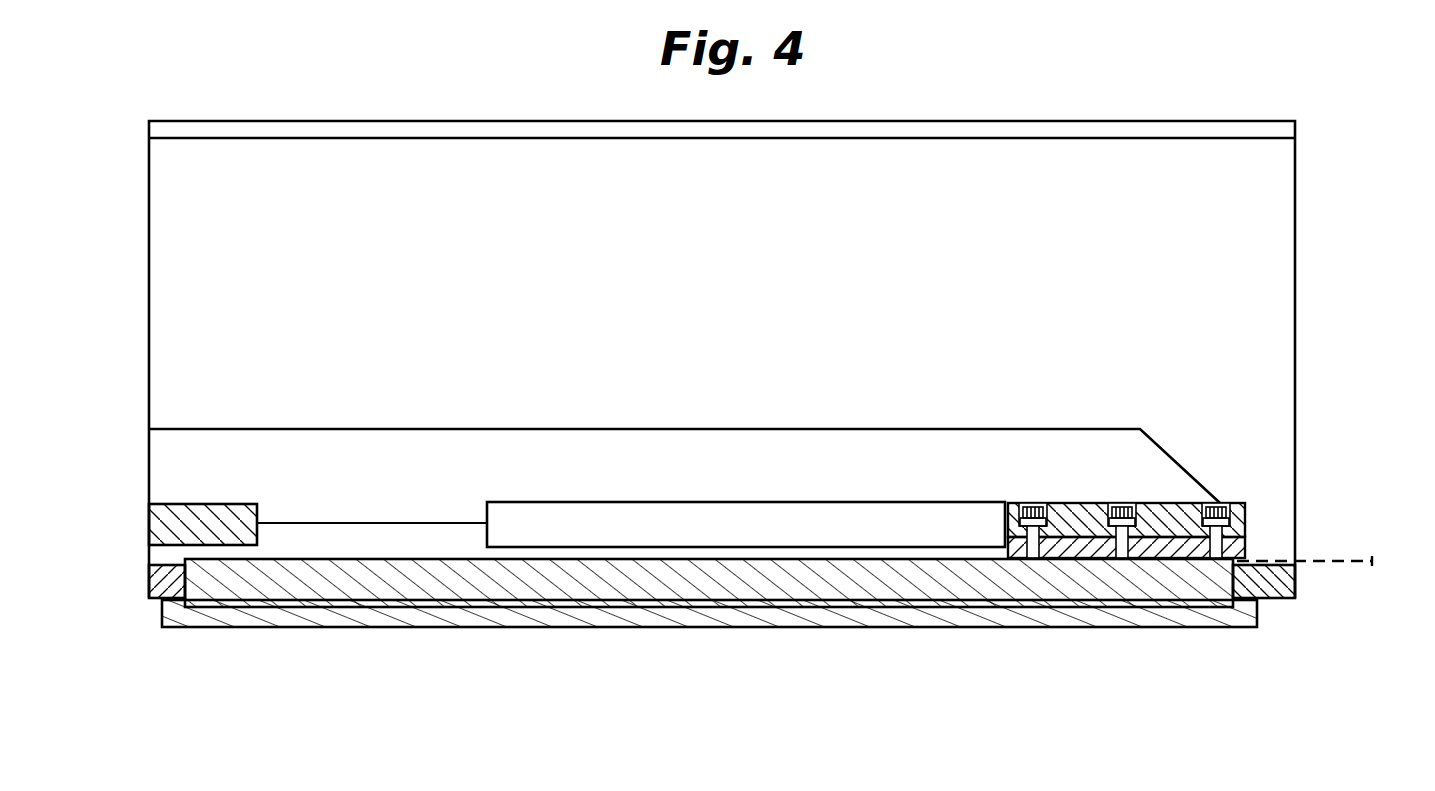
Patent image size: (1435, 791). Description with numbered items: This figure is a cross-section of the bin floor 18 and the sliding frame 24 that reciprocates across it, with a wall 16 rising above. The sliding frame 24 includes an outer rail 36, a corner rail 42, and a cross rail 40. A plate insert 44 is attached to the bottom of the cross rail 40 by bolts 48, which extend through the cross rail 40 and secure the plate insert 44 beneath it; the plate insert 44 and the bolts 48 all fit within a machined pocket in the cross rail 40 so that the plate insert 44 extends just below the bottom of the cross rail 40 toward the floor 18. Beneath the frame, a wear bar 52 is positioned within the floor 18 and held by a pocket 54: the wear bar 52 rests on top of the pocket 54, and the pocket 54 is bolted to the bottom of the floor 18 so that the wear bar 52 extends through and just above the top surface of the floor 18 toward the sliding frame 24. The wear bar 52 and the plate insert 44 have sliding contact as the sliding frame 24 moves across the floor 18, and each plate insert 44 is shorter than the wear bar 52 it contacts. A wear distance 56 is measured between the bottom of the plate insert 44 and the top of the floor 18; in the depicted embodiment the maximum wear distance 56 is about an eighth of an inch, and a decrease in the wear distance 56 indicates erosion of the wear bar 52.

The wall 16 is at (970, 128).
The sliding frame 24 is at (662, 432).
The outer rail 36 is at (238, 435).
The corner rail 42 is at (668, 510).
The cross rail 40 is at (1245, 505).
The plate insert 44 is at (1248, 545).
The bolts 48 is at (1216, 503).
The wear bar 52 is at (1200, 596).
The pocket 54 is at (1148, 617).
The floor 18 is at (1280, 598).
The wear distance 56 is at (1375, 557).